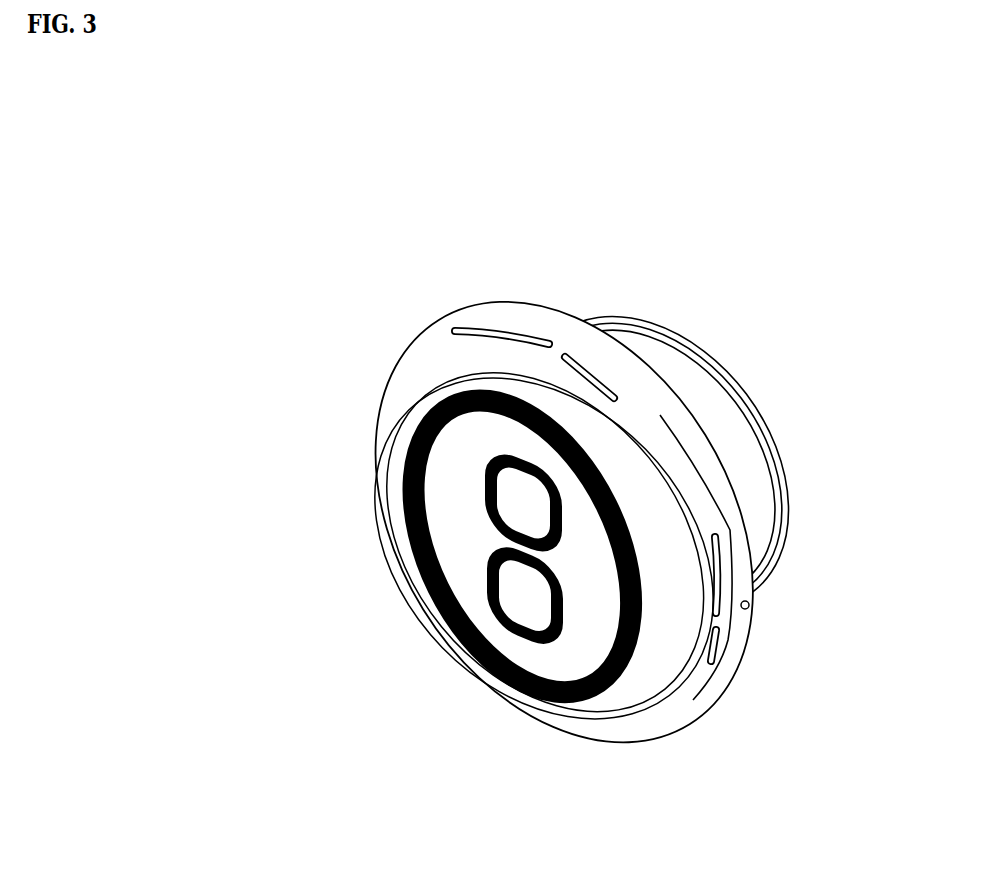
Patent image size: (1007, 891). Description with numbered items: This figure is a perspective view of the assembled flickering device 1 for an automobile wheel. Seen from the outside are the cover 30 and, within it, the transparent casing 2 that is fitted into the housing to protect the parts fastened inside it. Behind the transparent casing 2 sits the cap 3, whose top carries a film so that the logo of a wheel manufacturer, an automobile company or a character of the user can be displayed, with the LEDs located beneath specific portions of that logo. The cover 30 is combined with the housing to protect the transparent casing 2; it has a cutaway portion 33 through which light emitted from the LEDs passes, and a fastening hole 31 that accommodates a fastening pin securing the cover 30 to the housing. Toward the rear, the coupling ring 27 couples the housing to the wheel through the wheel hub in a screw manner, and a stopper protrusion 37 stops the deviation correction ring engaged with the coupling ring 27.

The flickering device 1 is at (347, 233).
The transparent casing 2 is at (407, 427).
The cap 3 is at (453, 523).
The coupling ring 27 is at (773, 507).
The cover 30 is at (633, 720).
The fastening hole 31 is at (752, 607).
The cutaway portion 33 is at (712, 660).
The stopper protrusion 37 is at (750, 400).